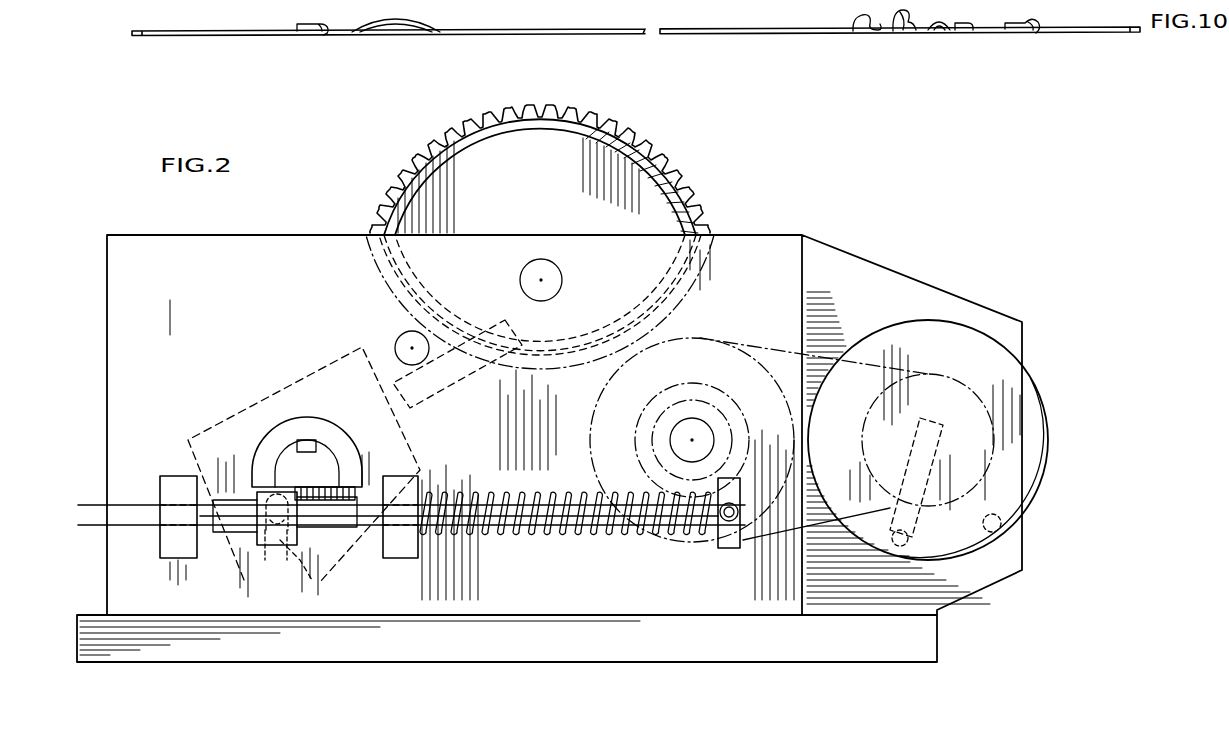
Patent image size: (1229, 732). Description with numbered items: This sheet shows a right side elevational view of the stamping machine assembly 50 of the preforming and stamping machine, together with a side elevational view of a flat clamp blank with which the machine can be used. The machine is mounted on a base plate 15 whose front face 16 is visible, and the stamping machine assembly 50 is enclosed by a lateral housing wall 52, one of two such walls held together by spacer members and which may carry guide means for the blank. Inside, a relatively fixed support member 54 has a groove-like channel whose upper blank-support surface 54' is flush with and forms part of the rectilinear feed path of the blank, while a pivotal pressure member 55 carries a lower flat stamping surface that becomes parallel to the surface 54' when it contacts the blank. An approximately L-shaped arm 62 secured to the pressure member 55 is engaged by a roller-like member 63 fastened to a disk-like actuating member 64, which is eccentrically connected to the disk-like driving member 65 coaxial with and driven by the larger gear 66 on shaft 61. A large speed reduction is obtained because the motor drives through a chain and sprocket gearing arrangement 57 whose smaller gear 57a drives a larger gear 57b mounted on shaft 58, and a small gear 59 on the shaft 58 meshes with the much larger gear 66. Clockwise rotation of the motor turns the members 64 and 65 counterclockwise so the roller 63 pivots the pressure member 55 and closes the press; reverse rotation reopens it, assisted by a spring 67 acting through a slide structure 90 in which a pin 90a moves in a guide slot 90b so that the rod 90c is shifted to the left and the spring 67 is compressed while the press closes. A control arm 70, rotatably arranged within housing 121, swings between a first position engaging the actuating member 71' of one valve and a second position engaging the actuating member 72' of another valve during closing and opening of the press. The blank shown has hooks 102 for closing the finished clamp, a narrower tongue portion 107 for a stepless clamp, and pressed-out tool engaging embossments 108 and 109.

In FIG. 10, the tongue portion 107 is at (1090, 30).
In FIG. 10, the tool engaging embossment 108 is at (1032, 28).
In FIG. 10, the tool engaging embossment 109 is at (328, 28).
In FIG. 10, the hook 102 is at (893, 24).
In FIG. 2, the base plate 15 is at (905, 637).
In FIG. 2, the front face 16 is at (78, 630).
In FIG. 2, the stamping machine assembly 50 is at (718, 195).
In FIG. 2, the lateral housing wall 52 is at (299, 252).
In FIG. 2, the support member 54 is at (322, 458).
In FIG. 2, the upper blank-support surface 54' is at (320, 420).
In FIG. 2, the pivotal pressure member 55 is at (210, 430).
In FIG. 2, the chain and sprocket gearing arrangement 57 is at (822, 352).
In FIG. 2, the smaller gear 57a is at (958, 385).
In FIG. 2, the larger gear 57b is at (726, 323).
In FIG. 2, the shaft 58 is at (655, 448).
In FIG. 2, the small gear 59 is at (705, 395).
In FIG. 2, the shaft 61 is at (561, 282).
In FIG. 2, the L-shaped arm 62 is at (472, 330).
In FIG. 2, the roller-like member 63 is at (405, 332).
In FIG. 2, the disk-like actuating member 64 is at (578, 165).
In FIG. 2, the disk-like driving member 65 is at (622, 153).
In FIG. 2, the larger gear 66 is at (664, 158).
In FIG. 2, the spring 67 is at (585, 535).
In FIG. 2, the control arm 70 is at (920, 470).
In FIG. 2, the actuating member 71' is at (893, 568).
In FIG. 2, the actuating member 72' is at (1025, 537).
In FIG. 2, the slide structure 90 is at (258, 545).
In FIG. 2, the pin 90a is at (318, 560).
In FIG. 2, the guide slot 90b is at (280, 560).
In FIG. 2, the rod 90c is at (355, 530).
In FIG. 2, the housing 121 is at (1035, 475).